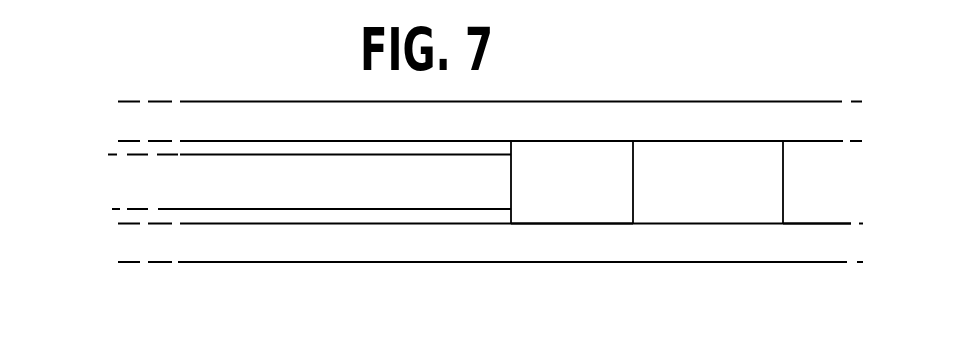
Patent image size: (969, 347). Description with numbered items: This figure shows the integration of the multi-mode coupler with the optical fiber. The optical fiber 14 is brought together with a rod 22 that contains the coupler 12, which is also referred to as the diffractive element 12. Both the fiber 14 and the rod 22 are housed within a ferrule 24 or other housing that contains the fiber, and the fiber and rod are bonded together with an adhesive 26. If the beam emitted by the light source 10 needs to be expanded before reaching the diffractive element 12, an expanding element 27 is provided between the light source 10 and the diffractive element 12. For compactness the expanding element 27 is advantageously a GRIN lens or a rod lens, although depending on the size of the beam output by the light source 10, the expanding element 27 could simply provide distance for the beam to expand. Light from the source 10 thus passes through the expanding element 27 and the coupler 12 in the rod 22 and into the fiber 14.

The light source 10 is at (852, 200).
The coupler 12 is at (633, 201).
The optical fiber 14 is at (130, 193).
The rod 22 is at (551, 184).
The ferrule 24 is at (598, 117).
The adhesive 26 is at (512, 193).
The expanding element 27 is at (729, 200).